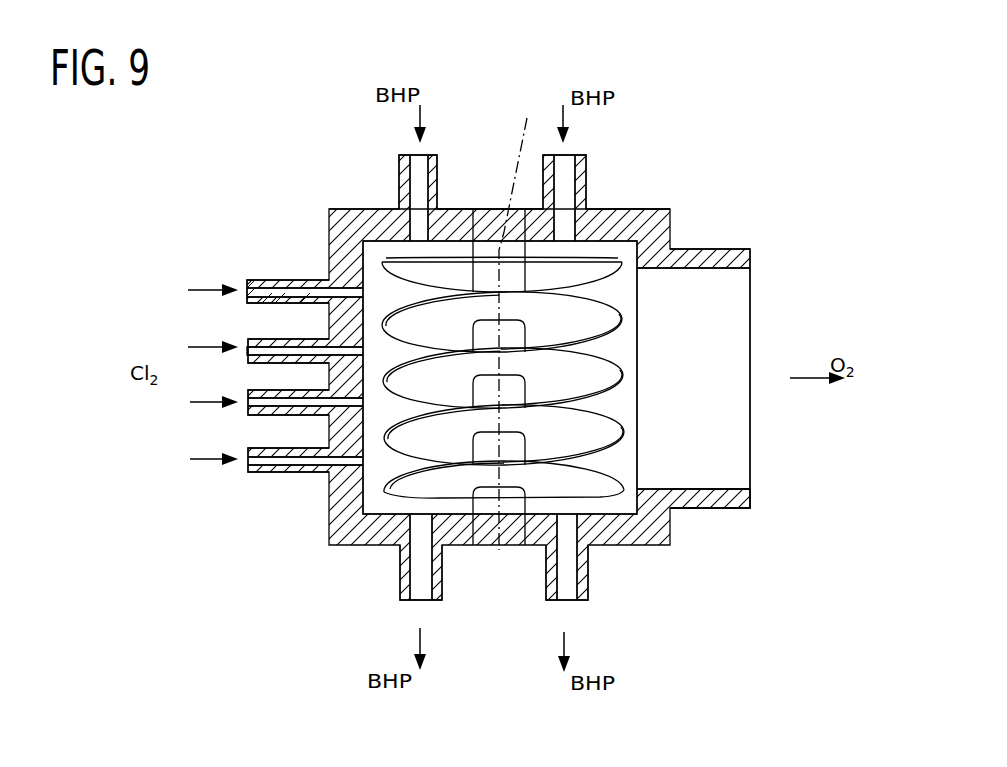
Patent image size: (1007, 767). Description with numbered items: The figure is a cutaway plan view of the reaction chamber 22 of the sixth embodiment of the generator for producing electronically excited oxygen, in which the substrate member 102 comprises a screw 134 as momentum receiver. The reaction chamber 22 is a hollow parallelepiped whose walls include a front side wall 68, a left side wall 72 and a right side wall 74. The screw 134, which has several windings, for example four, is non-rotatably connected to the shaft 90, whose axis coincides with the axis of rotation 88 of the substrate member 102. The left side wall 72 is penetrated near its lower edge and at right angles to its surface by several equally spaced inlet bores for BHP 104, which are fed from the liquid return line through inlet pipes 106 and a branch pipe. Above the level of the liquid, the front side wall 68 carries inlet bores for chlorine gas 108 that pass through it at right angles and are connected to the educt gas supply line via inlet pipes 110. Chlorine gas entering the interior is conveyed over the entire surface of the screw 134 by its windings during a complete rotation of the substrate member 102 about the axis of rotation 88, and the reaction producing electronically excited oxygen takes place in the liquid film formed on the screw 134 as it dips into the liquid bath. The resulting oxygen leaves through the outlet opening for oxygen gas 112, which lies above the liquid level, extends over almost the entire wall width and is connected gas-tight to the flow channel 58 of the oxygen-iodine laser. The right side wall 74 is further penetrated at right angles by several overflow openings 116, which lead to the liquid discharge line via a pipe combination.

The reaction chamber 22 is at (681, 546).
The flow channel 58 is at (727, 347).
The front side wall 68 is at (346, 238).
The left side wall 72 is at (478, 198).
The right side wall 74 is at (522, 540).
The axis of rotation 88 is at (526, 318).
The shaft 90 is at (530, 377).
The substrate member 102 is at (613, 377).
The inlet bores for BHP 104 is at (450, 218).
The inlet pipes 106 is at (432, 187).
The inlet bores for chlorine gas 108 is at (314, 346).
The inlet pipes 110 is at (288, 346).
The outlet opening for oxygen gas 112 is at (727, 491).
The overflow openings 116 is at (418, 573).
The screw 134 is at (615, 314).